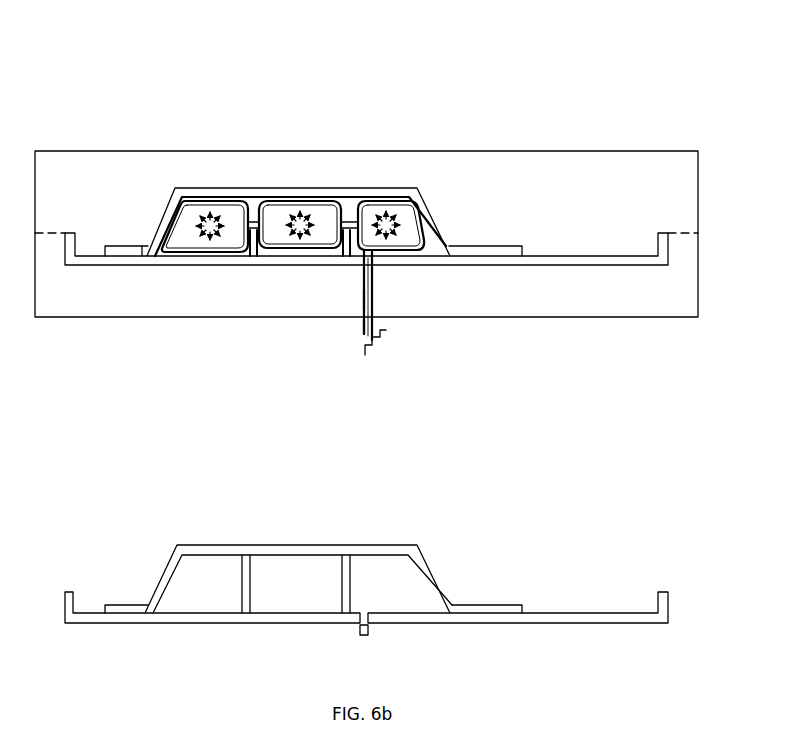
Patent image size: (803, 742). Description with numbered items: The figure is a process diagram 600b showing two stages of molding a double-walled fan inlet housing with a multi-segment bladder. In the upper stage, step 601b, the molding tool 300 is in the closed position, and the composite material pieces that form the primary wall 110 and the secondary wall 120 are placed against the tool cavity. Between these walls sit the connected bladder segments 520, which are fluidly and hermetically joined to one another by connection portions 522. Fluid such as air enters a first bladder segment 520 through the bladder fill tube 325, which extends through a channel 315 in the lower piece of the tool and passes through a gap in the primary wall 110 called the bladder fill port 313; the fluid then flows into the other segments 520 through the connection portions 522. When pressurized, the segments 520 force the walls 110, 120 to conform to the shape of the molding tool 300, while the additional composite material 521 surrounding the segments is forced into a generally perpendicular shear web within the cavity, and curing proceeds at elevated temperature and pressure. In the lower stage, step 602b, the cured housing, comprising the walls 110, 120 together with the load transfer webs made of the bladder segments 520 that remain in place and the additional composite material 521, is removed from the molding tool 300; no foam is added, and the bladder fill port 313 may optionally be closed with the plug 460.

The process diagram 600b is at (568, 50).
The step of inserting and pressurizing bladder segments 601b is at (365, 183).
The step of removing cured housing 602b is at (53, 485).
The molding tool 300 is at (467, 150).
The primary wall 110 is at (593, 258).
The secondary wall 120 is at (493, 248).
The bladder segment 520 is at (222, 207).
The additional composite material 521 is at (192, 252).
The connection portion 522 is at (257, 232).
The bladder fill port 313 is at (373, 262).
The channel 315 is at (362, 300).
The bladder fill tube 325 is at (366, 327).
The plug 460 is at (365, 637).